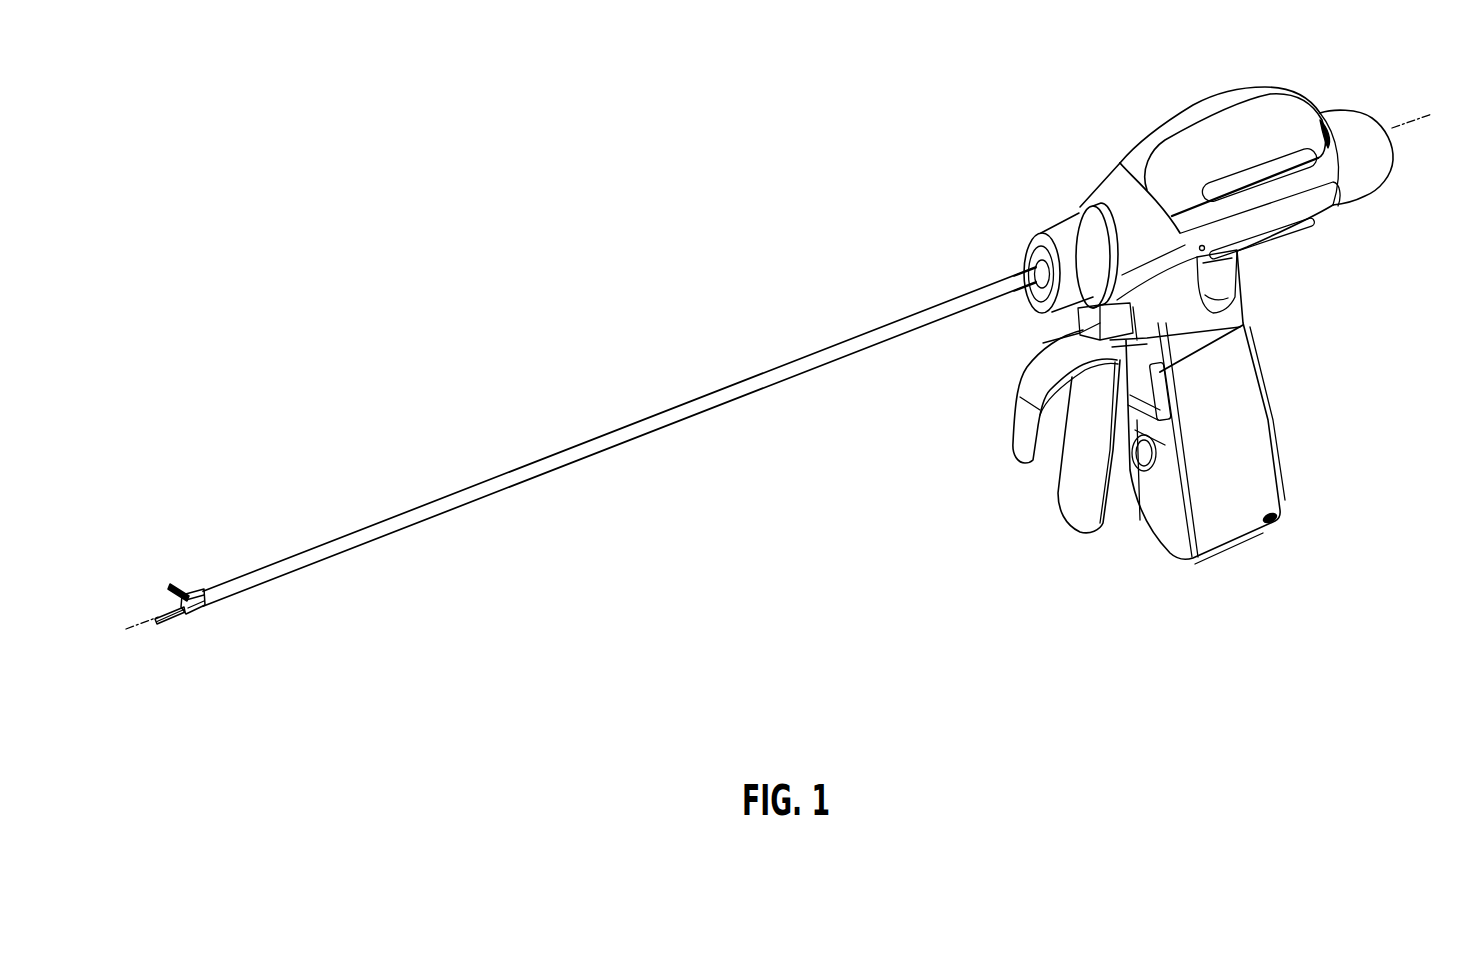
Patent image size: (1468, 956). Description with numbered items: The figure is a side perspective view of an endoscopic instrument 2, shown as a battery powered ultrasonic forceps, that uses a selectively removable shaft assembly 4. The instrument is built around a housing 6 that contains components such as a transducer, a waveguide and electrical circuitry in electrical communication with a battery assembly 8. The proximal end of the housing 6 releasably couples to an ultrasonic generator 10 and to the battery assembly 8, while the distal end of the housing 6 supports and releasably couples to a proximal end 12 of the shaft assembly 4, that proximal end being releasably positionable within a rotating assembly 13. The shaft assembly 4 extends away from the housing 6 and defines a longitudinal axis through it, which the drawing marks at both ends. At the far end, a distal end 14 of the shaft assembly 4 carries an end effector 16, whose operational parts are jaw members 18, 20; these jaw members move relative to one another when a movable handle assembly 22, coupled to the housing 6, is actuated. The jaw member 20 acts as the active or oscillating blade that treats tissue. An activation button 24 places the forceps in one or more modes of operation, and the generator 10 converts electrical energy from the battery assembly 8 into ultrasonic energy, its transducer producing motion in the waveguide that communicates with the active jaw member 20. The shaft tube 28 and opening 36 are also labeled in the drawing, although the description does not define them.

The endoscopic instrument 2 is at (652, 219).
The shaft assembly 4 is at (777, 402).
The housing 6 is at (1317, 241).
The battery assembly 8 is at (1277, 391).
The ultrasonic generator 10 is at (1202, 113).
The proximal end 12 is at (1020, 272).
The rotating assembly 13 is at (1064, 231).
The distal end 14 is at (198, 592).
The end effector 16 is at (158, 599).
The jaw member 18 is at (176, 588).
The jaw member 20 is at (170, 615).
The movable handle assembly 22 is at (1070, 485).
The activation button 24 is at (1090, 317).
The elongated shaft tube 28 is at (623, 433).
The opening 36 is at (1029, 262).